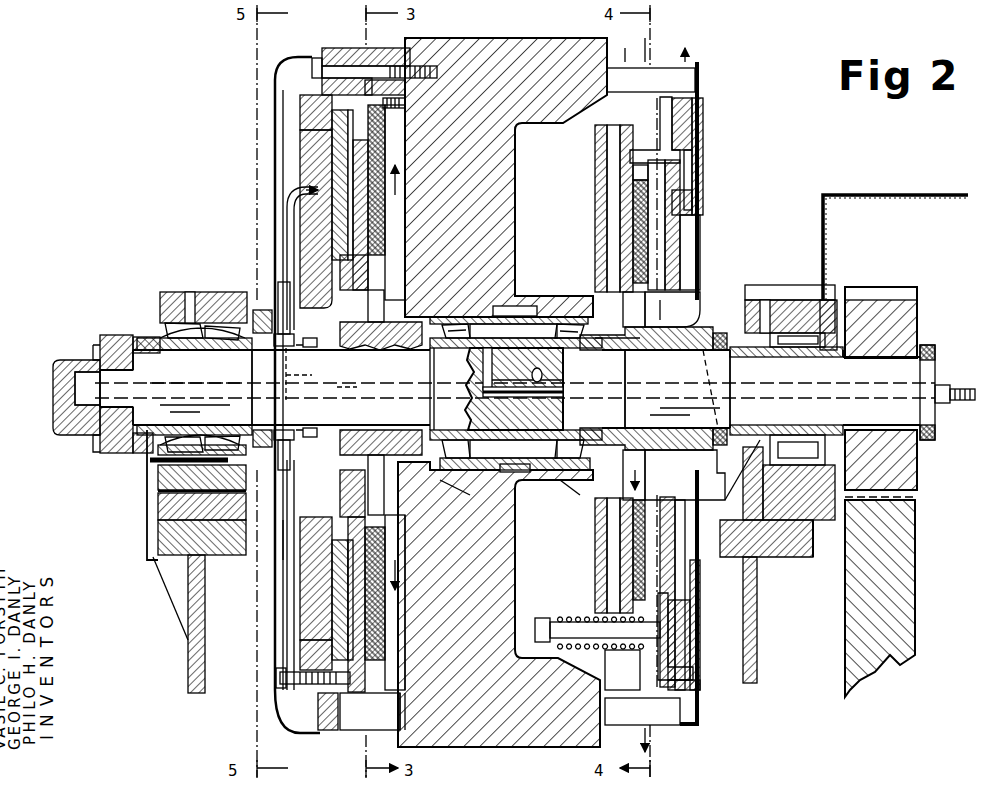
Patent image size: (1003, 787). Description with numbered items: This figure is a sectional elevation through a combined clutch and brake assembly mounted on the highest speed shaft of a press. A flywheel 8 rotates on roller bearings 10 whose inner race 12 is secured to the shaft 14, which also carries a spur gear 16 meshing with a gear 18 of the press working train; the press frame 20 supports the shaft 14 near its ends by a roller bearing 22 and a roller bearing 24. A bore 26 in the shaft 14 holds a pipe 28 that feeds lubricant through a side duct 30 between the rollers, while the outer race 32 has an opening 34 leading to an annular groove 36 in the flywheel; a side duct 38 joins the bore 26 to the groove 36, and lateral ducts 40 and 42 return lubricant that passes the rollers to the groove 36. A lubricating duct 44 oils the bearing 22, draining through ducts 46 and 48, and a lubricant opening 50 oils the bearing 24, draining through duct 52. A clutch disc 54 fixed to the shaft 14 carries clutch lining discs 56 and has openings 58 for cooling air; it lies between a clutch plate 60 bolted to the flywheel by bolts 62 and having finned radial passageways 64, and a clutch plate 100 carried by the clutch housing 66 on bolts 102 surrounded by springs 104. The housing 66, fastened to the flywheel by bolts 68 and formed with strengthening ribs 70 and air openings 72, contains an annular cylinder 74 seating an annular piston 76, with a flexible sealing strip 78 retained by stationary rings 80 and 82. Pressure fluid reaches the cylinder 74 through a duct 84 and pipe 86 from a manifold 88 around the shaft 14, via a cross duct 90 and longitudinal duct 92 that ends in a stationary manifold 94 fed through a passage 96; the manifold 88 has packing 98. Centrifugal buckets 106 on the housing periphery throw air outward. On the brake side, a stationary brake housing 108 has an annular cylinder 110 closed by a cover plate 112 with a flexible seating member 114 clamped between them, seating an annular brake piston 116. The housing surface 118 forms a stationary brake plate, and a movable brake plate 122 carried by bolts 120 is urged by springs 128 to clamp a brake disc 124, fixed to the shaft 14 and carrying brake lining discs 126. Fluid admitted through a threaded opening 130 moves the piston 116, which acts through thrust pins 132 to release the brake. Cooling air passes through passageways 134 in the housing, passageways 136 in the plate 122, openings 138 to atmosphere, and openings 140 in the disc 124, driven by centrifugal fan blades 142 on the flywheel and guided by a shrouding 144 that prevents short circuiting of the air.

The flywheel 8 is at (530, 40).
The roller bearings 10 is at (597, 340).
The inner race 12 is at (620, 338).
The shaft 14 is at (925, 370).
The spur gear 16 is at (905, 322).
The gear 18 is at (915, 600).
The press frame 20 is at (758, 646).
The roller bearing 22 is at (803, 430).
The roller bearing 24 is at (218, 426).
The bore 26 is at (563, 402).
The pipe 28 is at (472, 404).
The side duct 30 is at (513, 331).
The outer race 32 is at (452, 332).
The opening 34 is at (526, 444).
The annular groove 36 is at (530, 312).
The side duct 38 is at (545, 370).
The lateral duct 40 is at (470, 472).
The lateral duct 42 is at (565, 472).
The lubricating duct 44 is at (770, 300).
The drain duct 46 is at (772, 558).
The drain duct 48 is at (822, 556).
The lubricant opening 50 is at (190, 292).
The drain duct 52 is at (158, 478).
The clutch disc 54 is at (360, 326).
The clutch lining discs 56 is at (386, 232).
The openings 58 is at (368, 302).
The clutch plate 60 is at (406, 150).
The bolts 62 is at (406, 106).
The radial passageways 64 is at (394, 397).
The clutch housing 66 is at (340, 52).
The bolts 68 is at (312, 66).
The strengthening ribs 70 is at (283, 112).
The openings 72 is at (292, 526).
The annular cylinder 74 is at (305, 252).
The annular piston 76 is at (340, 152).
The flexible elastic sealing strip 78 is at (348, 172).
The stationary ring 80 is at (305, 112).
The stationary ring 82 is at (362, 262).
The duct 84 is at (287, 200).
The pipe 86 is at (290, 236).
The manifold 88 is at (308, 348).
The cross duct 90 is at (312, 376).
The longitudinal duct 92 is at (195, 383).
The stationary manifold 94 is at (70, 413).
The passage 96 is at (96, 445).
The packing 98 is at (275, 348).
The clutch plate 100 is at (370, 711).
The bolts 102 is at (318, 726).
The springs 104 is at (296, 688).
The centrifugal buckets 106 is at (350, 732).
The brake housing 108 is at (690, 246).
The annular cylinder 110 is at (690, 125).
The cylinder cover plate 112 is at (703, 200).
The flexible seating member 114 is at (702, 140).
The annular brake piston 116 is at (665, 130).
The stationary brake plate 118 is at (682, 272).
The bolts 120 is at (628, 652).
The movable brake plate 122 is at (650, 215).
The brake disc 124 is at (610, 160).
The brake lining discs 126 is at (633, 240).
The springs 128 is at (568, 616).
The internally threaded opening 130 is at (694, 162).
The thrust pins 132 is at (597, 150).
The passageways 134 is at (688, 566).
The passageways 136 is at (620, 192).
The openings 138 is at (690, 302).
The openings 140 is at (650, 396).
The centrifugal fan blades 142 is at (650, 62).
The shrouding 144 is at (702, 86).